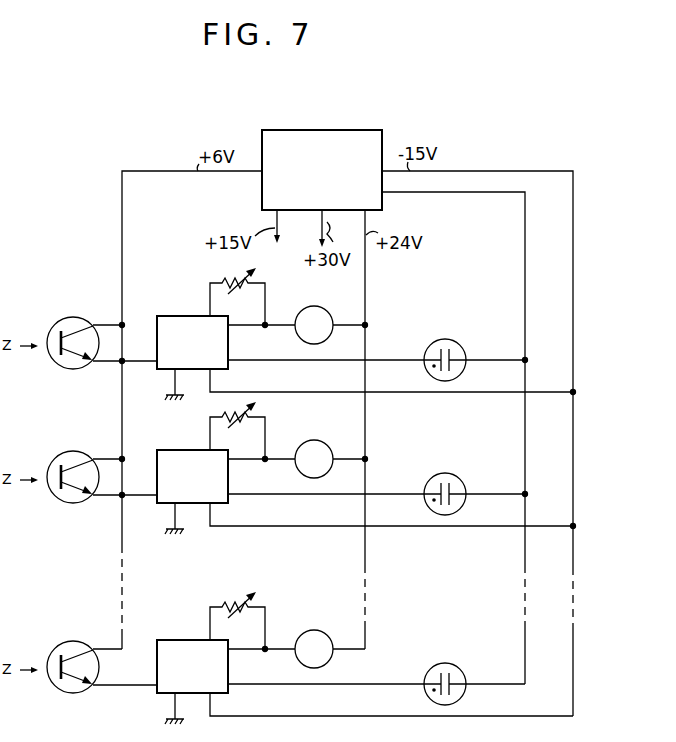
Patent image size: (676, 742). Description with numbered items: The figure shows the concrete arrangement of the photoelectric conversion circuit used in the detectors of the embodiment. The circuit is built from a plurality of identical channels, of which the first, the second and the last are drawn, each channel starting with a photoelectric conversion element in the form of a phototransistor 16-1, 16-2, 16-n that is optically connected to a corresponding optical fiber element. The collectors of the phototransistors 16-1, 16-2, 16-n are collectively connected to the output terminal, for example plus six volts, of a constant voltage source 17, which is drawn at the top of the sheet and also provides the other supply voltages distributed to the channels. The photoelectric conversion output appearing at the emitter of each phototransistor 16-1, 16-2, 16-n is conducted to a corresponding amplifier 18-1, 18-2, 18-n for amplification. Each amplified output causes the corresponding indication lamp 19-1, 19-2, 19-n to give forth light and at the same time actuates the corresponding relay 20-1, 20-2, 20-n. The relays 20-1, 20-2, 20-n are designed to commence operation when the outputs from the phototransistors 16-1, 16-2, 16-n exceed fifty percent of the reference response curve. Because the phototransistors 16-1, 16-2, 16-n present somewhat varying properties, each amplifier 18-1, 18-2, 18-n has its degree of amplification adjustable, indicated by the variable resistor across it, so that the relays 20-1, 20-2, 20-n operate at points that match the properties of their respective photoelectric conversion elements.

The constant voltage source 17 is at (324, 130).
The phototransistor 16-1 is at (70, 318).
The phototransistor 16-2 is at (66, 461).
The phototransistor 16-n is at (66, 651).
The amplifier 18-1 is at (167, 316).
The amplifier 18-2 is at (181, 477).
The amplifier 18-n is at (181, 667).
The relay 20-1 is at (306, 307).
The relay 20-2 is at (313, 446).
The relay 20-n is at (313, 636).
The indication lamp 19-1 is at (432, 340).
The indication lamp 19-2 is at (445, 479).
The indication lamp 19-n is at (445, 669).